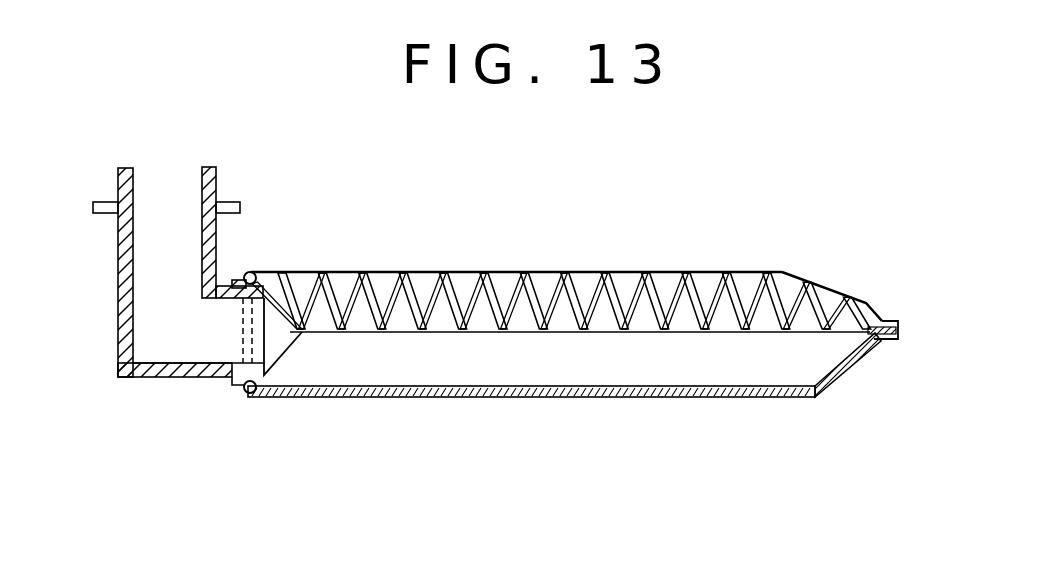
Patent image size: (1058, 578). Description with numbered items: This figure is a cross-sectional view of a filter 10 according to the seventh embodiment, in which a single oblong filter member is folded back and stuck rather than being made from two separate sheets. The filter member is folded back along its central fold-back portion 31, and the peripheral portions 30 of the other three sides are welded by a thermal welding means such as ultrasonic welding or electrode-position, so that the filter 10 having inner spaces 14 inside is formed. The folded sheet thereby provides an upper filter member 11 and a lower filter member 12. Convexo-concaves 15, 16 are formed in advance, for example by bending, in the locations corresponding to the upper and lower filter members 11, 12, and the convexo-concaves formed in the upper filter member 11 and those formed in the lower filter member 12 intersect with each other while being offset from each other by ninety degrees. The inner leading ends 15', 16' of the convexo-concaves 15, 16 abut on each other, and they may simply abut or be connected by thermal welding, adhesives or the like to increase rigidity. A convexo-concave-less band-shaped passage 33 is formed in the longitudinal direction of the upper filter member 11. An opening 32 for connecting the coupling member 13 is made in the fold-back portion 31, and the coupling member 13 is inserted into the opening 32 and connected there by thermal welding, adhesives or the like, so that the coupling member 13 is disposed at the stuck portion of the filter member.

The filter 10 is at (822, 240).
The upper filter member 11 is at (858, 293).
The lower filter member 12 is at (833, 388).
The coupling member 13 is at (218, 183).
The inner spaces 14 is at (502, 273).
The convexo-concaves 15 is at (535, 260).
The inner leading ends 15' is at (735, 369).
The convexo-concaves 16 is at (531, 429).
The inner leading ends 16' is at (567, 390).
The peripheral portions 30 is at (887, 320).
The fold-back portion 31 is at (230, 388).
The opening 32 is at (242, 332).
The band-shaped passage 33 is at (718, 272).